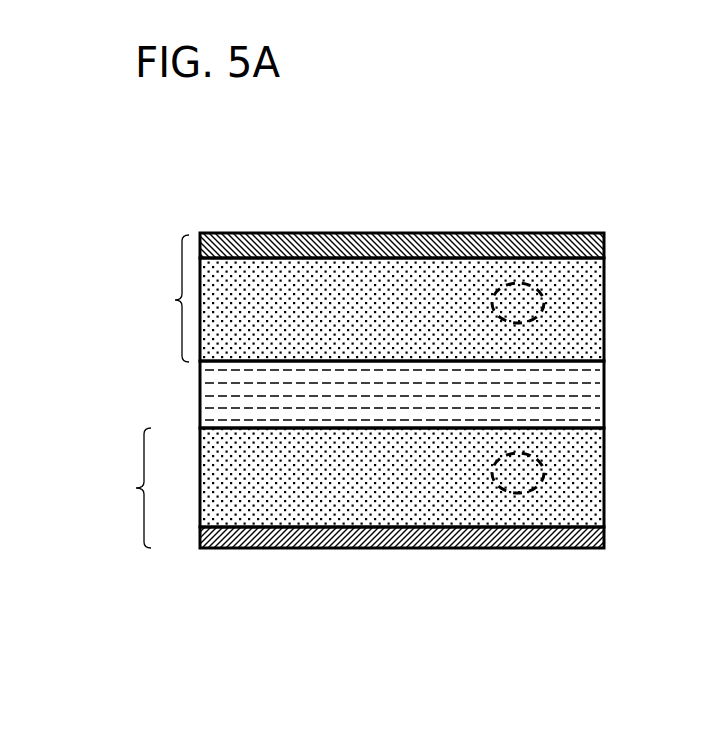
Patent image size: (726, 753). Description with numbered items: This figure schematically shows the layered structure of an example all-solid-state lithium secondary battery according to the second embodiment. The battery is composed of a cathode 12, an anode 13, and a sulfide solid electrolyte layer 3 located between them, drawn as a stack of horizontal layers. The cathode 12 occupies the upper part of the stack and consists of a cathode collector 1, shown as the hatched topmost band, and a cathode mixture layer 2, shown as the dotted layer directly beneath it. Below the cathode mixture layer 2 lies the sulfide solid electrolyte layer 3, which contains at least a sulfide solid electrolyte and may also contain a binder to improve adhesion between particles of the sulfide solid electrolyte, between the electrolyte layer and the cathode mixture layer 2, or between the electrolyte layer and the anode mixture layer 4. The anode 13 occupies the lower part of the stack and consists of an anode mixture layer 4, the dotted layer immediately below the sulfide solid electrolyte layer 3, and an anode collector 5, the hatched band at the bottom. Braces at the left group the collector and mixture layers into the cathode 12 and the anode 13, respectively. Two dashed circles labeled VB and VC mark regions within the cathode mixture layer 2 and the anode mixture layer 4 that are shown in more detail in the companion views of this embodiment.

The cathode collector 1 is at (450, 250).
The cathode mixture layer 2 is at (372, 300).
The sulfide solid electrolyte layer 3 is at (219, 401).
The anode mixture layer 4 is at (219, 469).
The anode collector 5 is at (206, 536).
The cathode 12 is at (164, 298).
The anode 13 is at (125, 488).
The region shown in FIG. 5B VB is at (549, 298).
The region shown in FIG. 5C VC is at (549, 465).